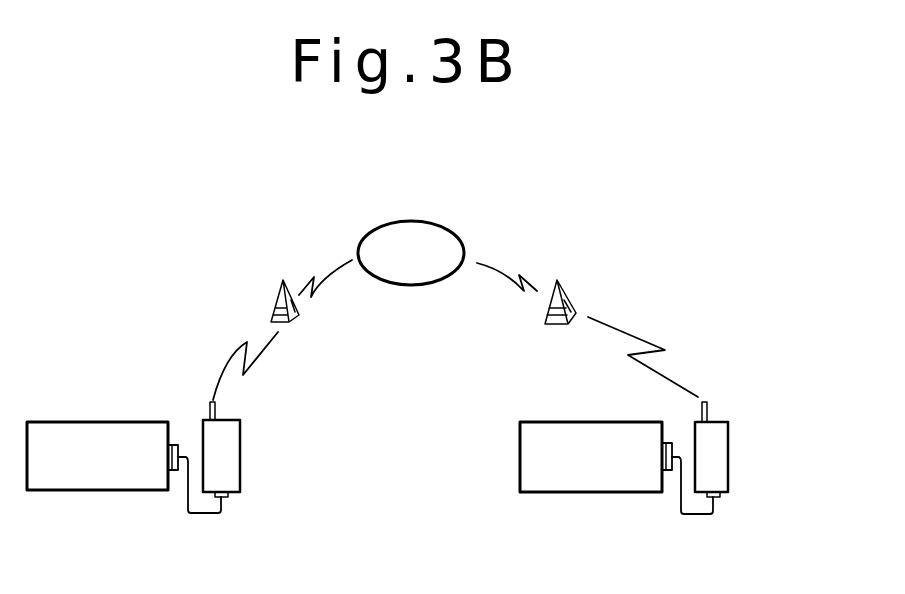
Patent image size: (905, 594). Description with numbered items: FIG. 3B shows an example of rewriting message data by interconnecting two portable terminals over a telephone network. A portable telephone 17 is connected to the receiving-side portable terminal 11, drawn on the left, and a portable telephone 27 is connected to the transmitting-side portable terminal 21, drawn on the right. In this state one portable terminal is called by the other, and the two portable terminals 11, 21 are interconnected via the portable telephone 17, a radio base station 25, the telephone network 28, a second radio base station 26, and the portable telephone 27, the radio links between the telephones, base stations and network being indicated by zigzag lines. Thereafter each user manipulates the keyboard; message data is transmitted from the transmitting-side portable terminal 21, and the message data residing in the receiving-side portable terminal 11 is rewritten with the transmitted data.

The receiving-side portable terminal 11 is at (100, 422).
The portable telephone 17 is at (242, 448).
The transmitting-side portable terminal 21 is at (559, 422).
The radio base station 25 is at (272, 305).
The radio base station 26 is at (570, 302).
The portable telephone 27 is at (730, 457).
The telephone network 28 is at (432, 221).